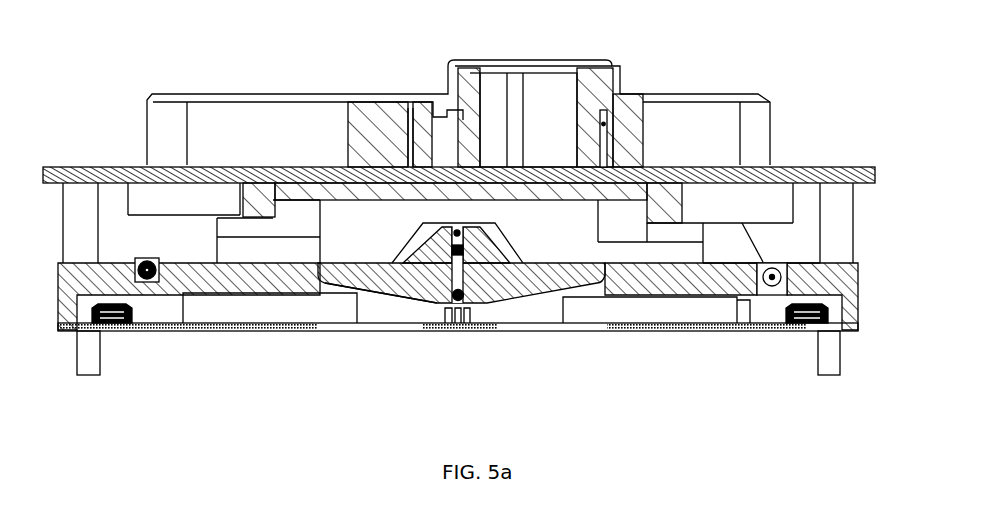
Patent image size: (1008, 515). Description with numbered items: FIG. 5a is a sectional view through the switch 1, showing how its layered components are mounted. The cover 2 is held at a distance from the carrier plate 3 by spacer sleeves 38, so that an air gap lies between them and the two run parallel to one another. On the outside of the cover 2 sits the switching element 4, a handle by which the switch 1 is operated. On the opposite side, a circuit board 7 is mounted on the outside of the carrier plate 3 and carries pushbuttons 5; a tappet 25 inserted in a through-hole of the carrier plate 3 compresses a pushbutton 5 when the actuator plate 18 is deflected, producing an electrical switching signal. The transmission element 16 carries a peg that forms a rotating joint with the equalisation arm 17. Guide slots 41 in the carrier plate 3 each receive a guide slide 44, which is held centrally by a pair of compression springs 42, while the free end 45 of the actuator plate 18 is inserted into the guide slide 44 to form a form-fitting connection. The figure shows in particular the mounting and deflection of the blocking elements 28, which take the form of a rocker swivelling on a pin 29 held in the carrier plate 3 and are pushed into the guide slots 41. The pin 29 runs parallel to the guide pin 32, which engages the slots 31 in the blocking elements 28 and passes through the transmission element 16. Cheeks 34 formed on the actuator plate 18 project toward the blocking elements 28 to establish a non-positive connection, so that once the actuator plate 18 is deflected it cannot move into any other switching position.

The switch 1 is at (624, 37).
The cover 2 is at (723, 167).
The carrier plate 3 is at (223, 282).
The switching element 4 is at (532, 90).
The pushbutton 5 is at (108, 335).
The circuit board 7 is at (647, 337).
The transmission element 16 is at (236, 242).
The equalisation arm 17 is at (295, 222).
The actuator plate 18 is at (657, 203).
The tappet 25 is at (133, 335).
The blocking element 28 is at (532, 285).
The pin 29 is at (458, 300).
The slot 31 is at (448, 303).
The guide pin 32 is at (487, 302).
The cheek 34 is at (368, 225).
The spacer sleeve 38 is at (80, 195).
The guide slot 41 is at (396, 299).
The compression spring 42 is at (147, 270).
The guide slide 44 is at (185, 335).
The free end 45 is at (796, 245).